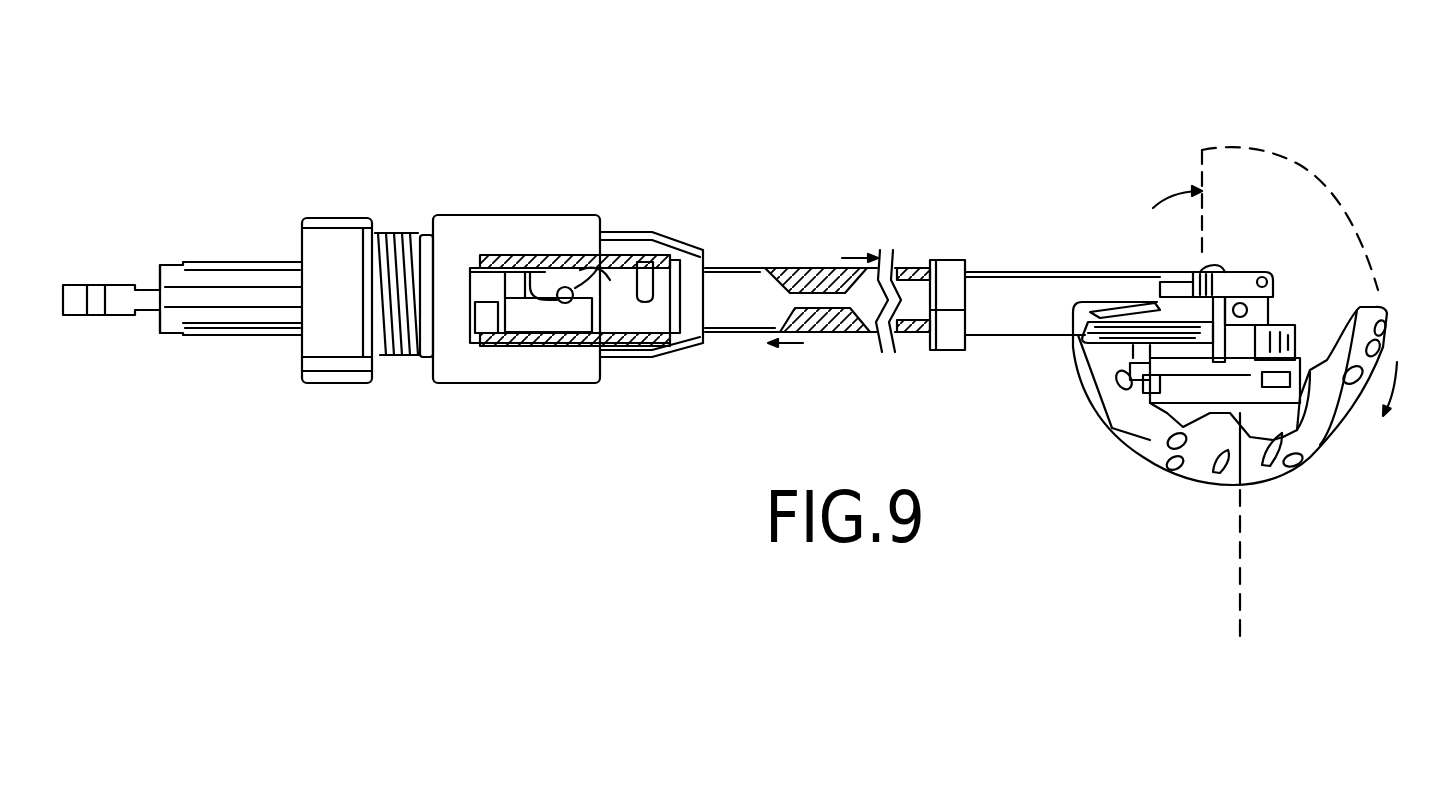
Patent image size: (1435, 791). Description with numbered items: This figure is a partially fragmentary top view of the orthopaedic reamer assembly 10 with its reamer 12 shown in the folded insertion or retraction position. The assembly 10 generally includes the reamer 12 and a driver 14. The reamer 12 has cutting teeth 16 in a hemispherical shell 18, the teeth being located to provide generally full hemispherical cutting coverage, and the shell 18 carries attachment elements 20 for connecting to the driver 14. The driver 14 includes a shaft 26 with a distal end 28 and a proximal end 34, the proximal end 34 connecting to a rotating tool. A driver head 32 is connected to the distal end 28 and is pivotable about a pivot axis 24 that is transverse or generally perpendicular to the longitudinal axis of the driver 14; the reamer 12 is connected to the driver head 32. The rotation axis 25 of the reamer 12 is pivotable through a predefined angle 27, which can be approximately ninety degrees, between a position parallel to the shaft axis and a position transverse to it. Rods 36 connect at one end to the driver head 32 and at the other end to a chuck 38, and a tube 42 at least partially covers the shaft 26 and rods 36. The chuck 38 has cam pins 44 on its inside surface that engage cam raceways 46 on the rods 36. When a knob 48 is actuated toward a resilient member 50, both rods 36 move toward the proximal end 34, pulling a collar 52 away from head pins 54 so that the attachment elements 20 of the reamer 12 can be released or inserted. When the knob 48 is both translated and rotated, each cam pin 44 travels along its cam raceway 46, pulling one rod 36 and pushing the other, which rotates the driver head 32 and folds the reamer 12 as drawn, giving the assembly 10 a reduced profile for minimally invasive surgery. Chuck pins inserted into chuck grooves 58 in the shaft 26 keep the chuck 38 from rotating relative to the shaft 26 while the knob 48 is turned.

The orthopaedic reamer assembly 10 is at (789, 106).
The reamer 12 is at (1133, 447).
The driver 14 is at (1058, 296).
The cutting teeth 16 is at (1320, 453).
The hemispherical shell 18 is at (1333, 403).
The attachment elements 20 is at (1253, 463).
The pivot axis 24 is at (1247, 308).
The rotation axis 25 is at (1240, 583).
The shaft 26 is at (1147, 332).
The predefined angle 27 is at (1095, 300).
The distal end 28 is at (1002, 272).
The driver head 32 is at (1178, 389).
The proximal end 34 is at (175, 268).
The rods 36 is at (785, 270).
The chuck 38 is at (327, 373).
The tube 42 is at (727, 290).
The cam pins 44 is at (513, 273).
The cam raceways 46 is at (553, 289).
The knob 48 is at (498, 373).
The resilient member 50 is at (400, 353).
The collar 52 is at (1224, 368).
The head pins 54 is at (1272, 330).
The chuck grooves 58 is at (237, 297).